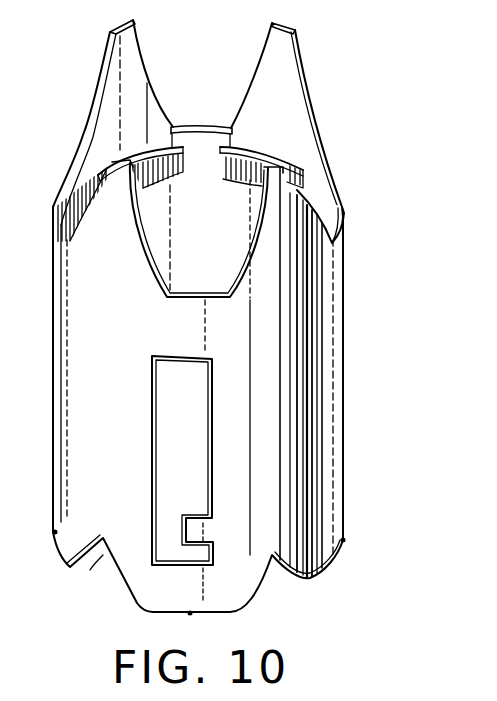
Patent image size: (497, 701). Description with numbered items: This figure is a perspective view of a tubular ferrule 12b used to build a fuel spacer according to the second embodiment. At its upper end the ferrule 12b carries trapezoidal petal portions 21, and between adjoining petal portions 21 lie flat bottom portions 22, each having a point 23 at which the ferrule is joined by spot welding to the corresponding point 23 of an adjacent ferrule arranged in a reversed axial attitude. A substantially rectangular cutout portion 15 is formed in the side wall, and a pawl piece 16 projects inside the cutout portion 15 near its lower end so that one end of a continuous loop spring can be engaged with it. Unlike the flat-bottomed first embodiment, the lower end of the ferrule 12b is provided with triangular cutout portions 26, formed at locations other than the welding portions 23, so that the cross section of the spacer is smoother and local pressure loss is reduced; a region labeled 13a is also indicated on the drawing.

The tubular ferrule 12b is at (328, 425).
The petal portion 21 is at (285, 81).
The flat bottom portion 22 is at (340, 188).
The welding point 23 is at (340, 215).
The frame 13a is at (222, 172).
The cutout portion 15 is at (177, 432).
The pawl piece 16 is at (187, 538).
The triangular cutout portion 26 is at (103, 553).